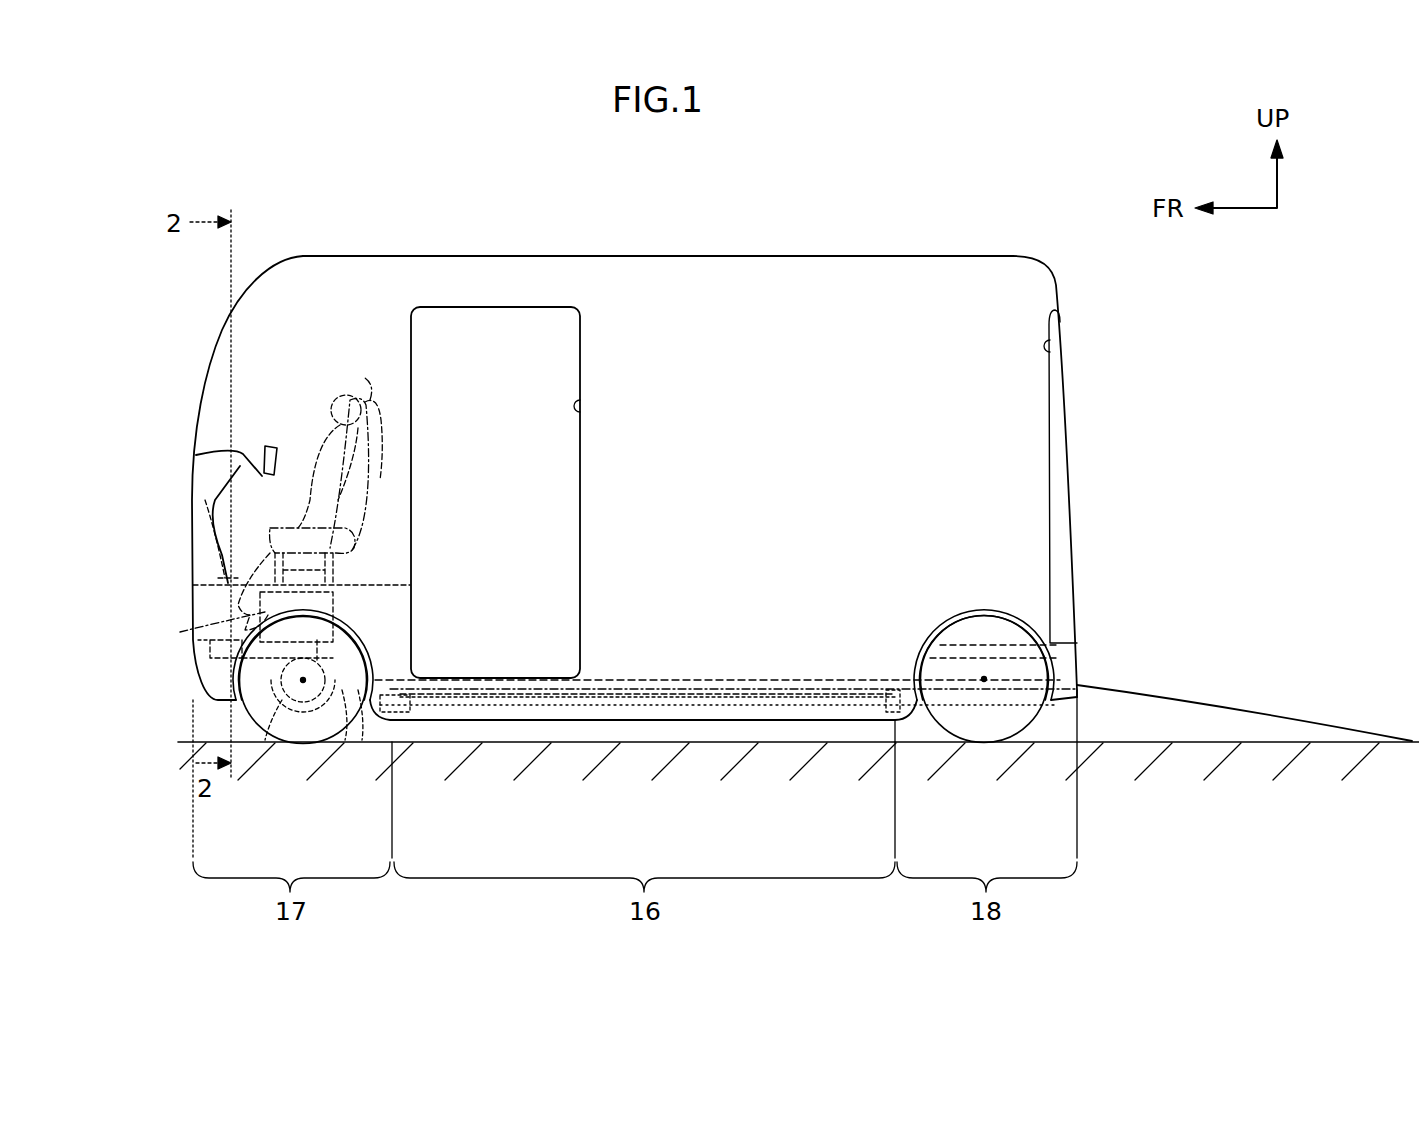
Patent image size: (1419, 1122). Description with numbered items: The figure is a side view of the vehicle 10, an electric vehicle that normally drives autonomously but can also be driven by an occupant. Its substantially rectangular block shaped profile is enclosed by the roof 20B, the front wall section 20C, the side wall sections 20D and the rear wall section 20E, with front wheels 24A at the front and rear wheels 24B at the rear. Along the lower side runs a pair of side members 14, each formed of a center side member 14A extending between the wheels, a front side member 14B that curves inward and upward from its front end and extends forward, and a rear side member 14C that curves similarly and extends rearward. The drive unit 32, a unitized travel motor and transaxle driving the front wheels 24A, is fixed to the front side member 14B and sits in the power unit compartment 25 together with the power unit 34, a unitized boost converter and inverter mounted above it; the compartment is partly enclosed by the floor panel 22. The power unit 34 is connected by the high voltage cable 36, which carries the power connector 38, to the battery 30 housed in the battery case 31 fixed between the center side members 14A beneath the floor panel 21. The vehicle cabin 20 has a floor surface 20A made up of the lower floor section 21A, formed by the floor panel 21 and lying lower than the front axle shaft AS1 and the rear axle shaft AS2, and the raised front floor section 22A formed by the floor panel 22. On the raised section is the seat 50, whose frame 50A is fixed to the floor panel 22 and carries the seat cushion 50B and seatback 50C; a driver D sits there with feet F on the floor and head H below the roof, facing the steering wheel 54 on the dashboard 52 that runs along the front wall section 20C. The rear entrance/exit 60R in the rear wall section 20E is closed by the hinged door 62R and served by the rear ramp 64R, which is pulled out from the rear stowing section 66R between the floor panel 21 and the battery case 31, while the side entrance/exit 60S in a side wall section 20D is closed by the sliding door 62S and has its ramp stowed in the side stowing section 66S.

The vehicle 10 is at (748, 476).
The side member 14 is at (905, 722).
The center side member 14A is at (396, 722).
The front side member 14B is at (301, 604).
The rear side member 14C is at (1010, 650).
The vehicle cabin 20 is at (641, 432).
The floor surface 20A is at (700, 680).
The roof 20B is at (846, 256).
The front wall section 20C is at (200, 396).
The side wall section 20D is at (702, 310).
The rear wall section 20E is at (1062, 292).
The floor panel 21 is at (792, 680).
The lower floor section 21A is at (862, 680).
The floor panel 22 is at (190, 502).
The raised front floor section 22A is at (212, 582).
The front wheel 24A is at (299, 735).
The rear wheel 24B is at (975, 740).
The power unit compartment 25 is at (216, 615).
The battery 30 is at (665, 708).
The battery case 31 is at (620, 725).
The drive unit 32 is at (286, 745).
The power unit 34 is at (207, 618).
The high voltage cable 36 is at (352, 702).
The power connector 38 is at (380, 746).
The seat 50 is at (409, 481).
The frame 50A is at (362, 545).
The seat cushion 50B is at (358, 502).
The seatback 50C is at (378, 465).
The dashboard 52 is at (222, 429).
The steering wheel 54 is at (266, 443).
The side entrance/exit 60S is at (580, 406).
The rear entrance/exit 60R is at (1048, 350).
The sliding door 62S is at (555, 357).
The hinged door 62R is at (1064, 370).
The rear ramp 64R is at (1187, 700).
The side stowing section 66S is at (440, 715).
The rear stowing section 66R is at (790, 702).
The vehicle axle shaft of the front wheels AS1 is at (303, 680).
The vehicle axle shaft of the rear wheels AS2 is at (984, 679).
The driver D is at (345, 396).
The head H is at (375, 400).
The feet F is at (287, 460).